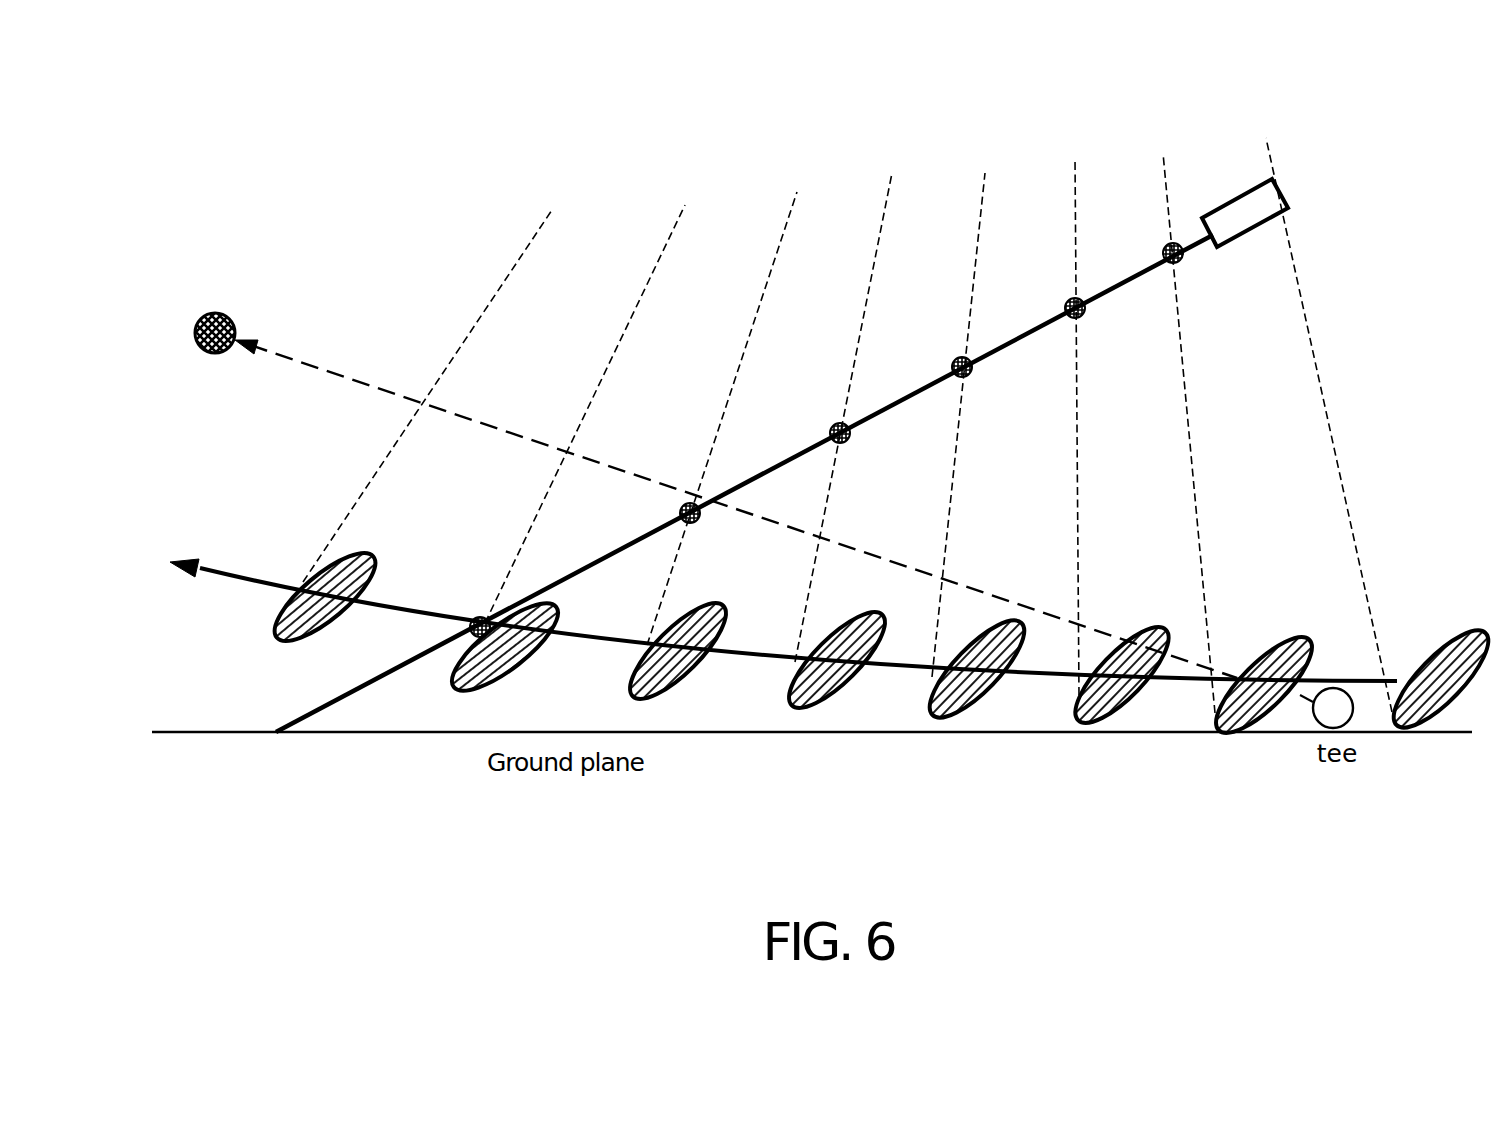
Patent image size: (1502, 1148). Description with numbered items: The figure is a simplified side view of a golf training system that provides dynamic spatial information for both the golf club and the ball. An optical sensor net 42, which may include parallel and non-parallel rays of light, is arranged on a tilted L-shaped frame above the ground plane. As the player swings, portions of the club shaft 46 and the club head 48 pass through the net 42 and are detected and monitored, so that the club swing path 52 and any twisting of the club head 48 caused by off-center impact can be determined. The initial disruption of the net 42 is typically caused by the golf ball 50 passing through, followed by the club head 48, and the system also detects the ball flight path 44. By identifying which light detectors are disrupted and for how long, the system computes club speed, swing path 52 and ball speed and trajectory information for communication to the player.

The optical sensor net 42 is at (779, 433).
The ball flight path 44 is at (453, 413).
The club shaft 46 is at (982, 210).
The club head 48 is at (960, 712).
The golf ball 50 is at (232, 305).
The club swing path 52 is at (768, 587).